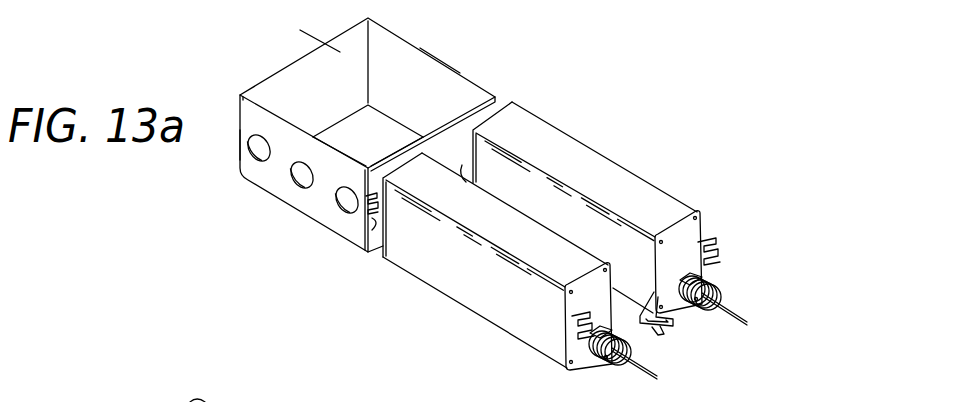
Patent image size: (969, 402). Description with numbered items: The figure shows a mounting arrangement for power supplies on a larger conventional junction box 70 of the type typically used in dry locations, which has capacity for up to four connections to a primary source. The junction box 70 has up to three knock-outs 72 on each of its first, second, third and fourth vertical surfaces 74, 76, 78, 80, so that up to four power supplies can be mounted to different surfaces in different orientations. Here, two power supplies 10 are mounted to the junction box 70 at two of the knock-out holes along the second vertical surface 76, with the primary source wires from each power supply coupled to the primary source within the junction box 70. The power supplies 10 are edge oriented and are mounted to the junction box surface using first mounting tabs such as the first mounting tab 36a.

The power supply 10 is at (449, 305).
The first mounting tab 36a is at (658, 333).
The junction box 70 is at (262, 80).
The knock-outs 72 is at (298, 177).
The first vertical surface 74 is at (238, 158).
The second vertical surface 76 is at (375, 244).
The third vertical surface 78 is at (330, 40).
The fourth vertical surface 80 is at (438, 57).